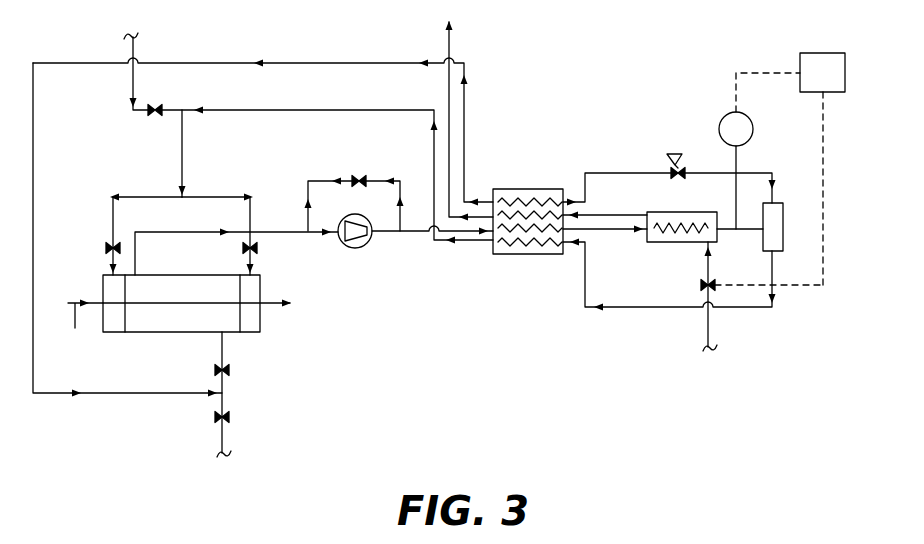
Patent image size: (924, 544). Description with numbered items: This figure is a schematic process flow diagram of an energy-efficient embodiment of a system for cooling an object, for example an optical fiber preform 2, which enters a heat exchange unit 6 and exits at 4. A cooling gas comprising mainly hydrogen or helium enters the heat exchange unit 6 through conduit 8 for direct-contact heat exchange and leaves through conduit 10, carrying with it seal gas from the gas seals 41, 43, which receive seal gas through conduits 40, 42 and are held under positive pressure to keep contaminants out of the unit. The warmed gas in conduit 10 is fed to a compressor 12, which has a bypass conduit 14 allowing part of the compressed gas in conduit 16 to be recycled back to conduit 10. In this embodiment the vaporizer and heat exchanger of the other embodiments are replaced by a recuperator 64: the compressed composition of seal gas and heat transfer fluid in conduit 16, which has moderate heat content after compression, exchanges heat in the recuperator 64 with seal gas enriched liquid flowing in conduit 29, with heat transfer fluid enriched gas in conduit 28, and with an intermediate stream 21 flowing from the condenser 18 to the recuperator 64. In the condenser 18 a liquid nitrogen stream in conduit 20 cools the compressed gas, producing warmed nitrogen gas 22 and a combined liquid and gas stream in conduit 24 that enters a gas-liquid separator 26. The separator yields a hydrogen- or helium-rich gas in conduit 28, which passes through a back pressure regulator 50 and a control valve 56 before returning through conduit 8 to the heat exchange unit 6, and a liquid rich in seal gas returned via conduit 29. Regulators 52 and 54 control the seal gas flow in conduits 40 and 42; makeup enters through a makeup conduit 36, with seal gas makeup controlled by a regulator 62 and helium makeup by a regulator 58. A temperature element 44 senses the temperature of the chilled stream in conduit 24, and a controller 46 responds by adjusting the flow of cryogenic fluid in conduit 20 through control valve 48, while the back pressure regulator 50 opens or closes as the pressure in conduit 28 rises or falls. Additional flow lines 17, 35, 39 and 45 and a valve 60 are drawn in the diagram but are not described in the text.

The optical fiber preform 2 is at (84, 328).
The exit 4 is at (268, 305).
The heat exchange unit 6 is at (160, 275).
The conduit 8 is at (225, 352).
The conduit 10 is at (172, 232).
The compressor 12 is at (360, 249).
The bypass conduit 14 is at (322, 180).
The conduit 16 is at (415, 231).
The line 17 is at (617, 232).
The condenser 18 is at (680, 212).
The conduit 20 is at (712, 320).
The intermediate stream 21 is at (598, 214).
The warmed nitrogen gas 22 is at (452, 38).
The conduit 24 is at (755, 229).
The gas-liquid separator 26 is at (785, 226).
The conduit 28 is at (595, 173).
The conduit 29 is at (612, 309).
The line 35 is at (350, 63).
The makeup conduit 36 is at (218, 445).
The line 39 is at (320, 110).
The conduit 40 is at (143, 195).
The seal 41 is at (100, 288).
The conduit 42 is at (218, 195).
The seal 43 is at (263, 288).
The temperature element 44 is at (722, 118).
The supply line 45 is at (130, 79).
The controller 46 is at (828, 54).
The control valve 48 is at (700, 286).
The back pressure regulator 50 is at (682, 160).
The regulator 52 is at (106, 247).
The regulator 54 is at (258, 248).
The control valve 56 is at (231, 370).
The regulator 58 is at (231, 417).
The valve 60 is at (362, 175).
The regulator 62 is at (158, 102).
The recuperator 64 is at (530, 188).